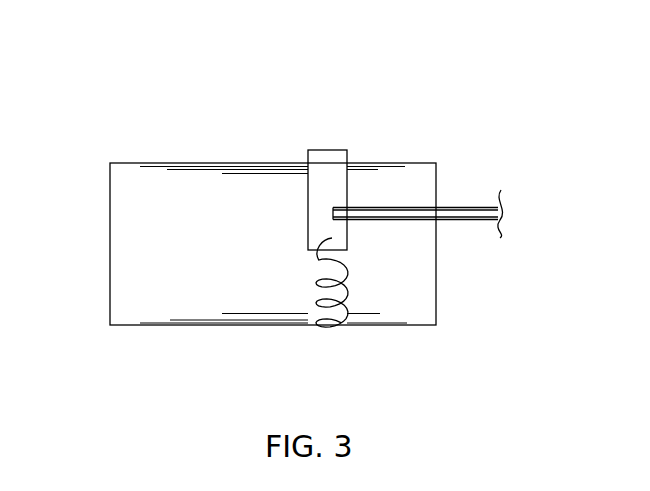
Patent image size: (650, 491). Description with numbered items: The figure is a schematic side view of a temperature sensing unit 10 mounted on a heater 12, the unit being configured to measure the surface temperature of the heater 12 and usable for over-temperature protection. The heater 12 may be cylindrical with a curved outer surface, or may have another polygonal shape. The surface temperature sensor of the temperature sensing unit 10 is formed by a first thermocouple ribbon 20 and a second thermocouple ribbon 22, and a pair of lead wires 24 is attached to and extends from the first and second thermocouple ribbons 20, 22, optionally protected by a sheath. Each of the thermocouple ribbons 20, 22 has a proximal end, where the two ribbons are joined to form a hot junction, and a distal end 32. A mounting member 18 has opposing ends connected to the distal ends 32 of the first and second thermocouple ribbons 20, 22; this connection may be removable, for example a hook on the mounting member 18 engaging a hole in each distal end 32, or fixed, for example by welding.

The temperature sensing unit 10 is at (280, 199).
The heater 12 is at (138, 162).
The first thermocouple ribbon 20 is at (370, 154).
The second thermocouple ribbon 22 is at (330, 150).
The lead wires 24 is at (459, 207).
The distal end 32 is at (327, 215).
The mounting member 18 is at (348, 303).